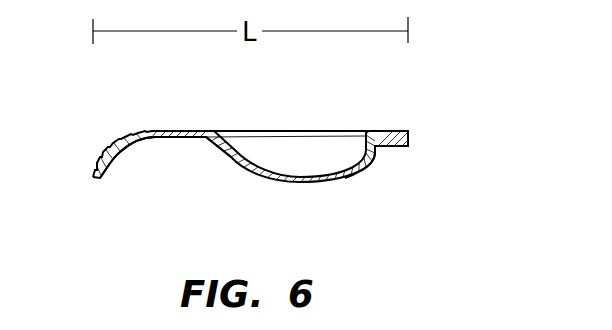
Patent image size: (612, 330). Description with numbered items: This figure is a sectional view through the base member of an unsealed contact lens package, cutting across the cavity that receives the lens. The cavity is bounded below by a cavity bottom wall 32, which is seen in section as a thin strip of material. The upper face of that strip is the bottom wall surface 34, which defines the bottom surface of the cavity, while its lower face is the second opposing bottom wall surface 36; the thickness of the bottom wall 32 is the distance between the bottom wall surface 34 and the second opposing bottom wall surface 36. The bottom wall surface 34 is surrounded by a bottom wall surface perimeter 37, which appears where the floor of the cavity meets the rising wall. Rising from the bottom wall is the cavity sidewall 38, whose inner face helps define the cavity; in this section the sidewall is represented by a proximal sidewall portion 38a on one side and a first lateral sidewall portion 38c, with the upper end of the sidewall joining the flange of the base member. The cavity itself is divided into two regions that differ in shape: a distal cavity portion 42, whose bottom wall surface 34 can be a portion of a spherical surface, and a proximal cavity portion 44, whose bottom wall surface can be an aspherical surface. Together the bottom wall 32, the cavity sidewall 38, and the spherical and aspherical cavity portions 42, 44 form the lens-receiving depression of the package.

The cavity bottom wall 32 is at (338, 178).
The bottom wall surface 34 is at (330, 172).
The second opposing bottom wall surface 36 is at (321, 185).
The bottom wall surface perimeter 37 is at (356, 160).
The cavity sidewall 38 is at (380, 157).
The proximal sidewall portion 38a is at (228, 130).
The first lateral sidewall portion 38c is at (303, 150).
The distal cavity portion 42 is at (348, 158).
The proximal cavity portion 44 is at (250, 148).